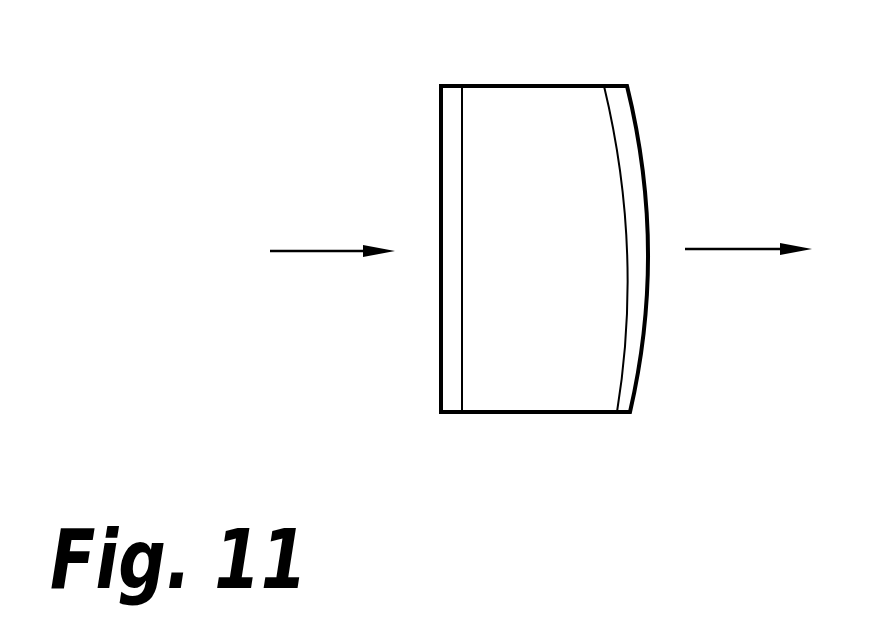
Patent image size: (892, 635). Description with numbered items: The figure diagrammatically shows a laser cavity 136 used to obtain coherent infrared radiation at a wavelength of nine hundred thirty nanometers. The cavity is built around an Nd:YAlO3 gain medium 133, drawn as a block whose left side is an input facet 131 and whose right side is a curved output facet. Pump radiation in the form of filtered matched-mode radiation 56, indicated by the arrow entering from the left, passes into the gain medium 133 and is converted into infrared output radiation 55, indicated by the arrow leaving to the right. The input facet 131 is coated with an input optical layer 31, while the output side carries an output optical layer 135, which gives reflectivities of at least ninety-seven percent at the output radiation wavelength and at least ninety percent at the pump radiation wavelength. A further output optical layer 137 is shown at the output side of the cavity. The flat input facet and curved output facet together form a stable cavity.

The input facet 131 is at (548, 85).
The Nd:YAlO3 gain medium 133 is at (462, 350).
The output optical layer 135 is at (626, 328).
The input optical layer 31 is at (468, 388).
The output optical layer 137 is at (612, 388).
The filtered matched-mode radiation 56 is at (317, 250).
The infrared output radiation 55 is at (722, 249).
The laser cavity 136 is at (563, 578).